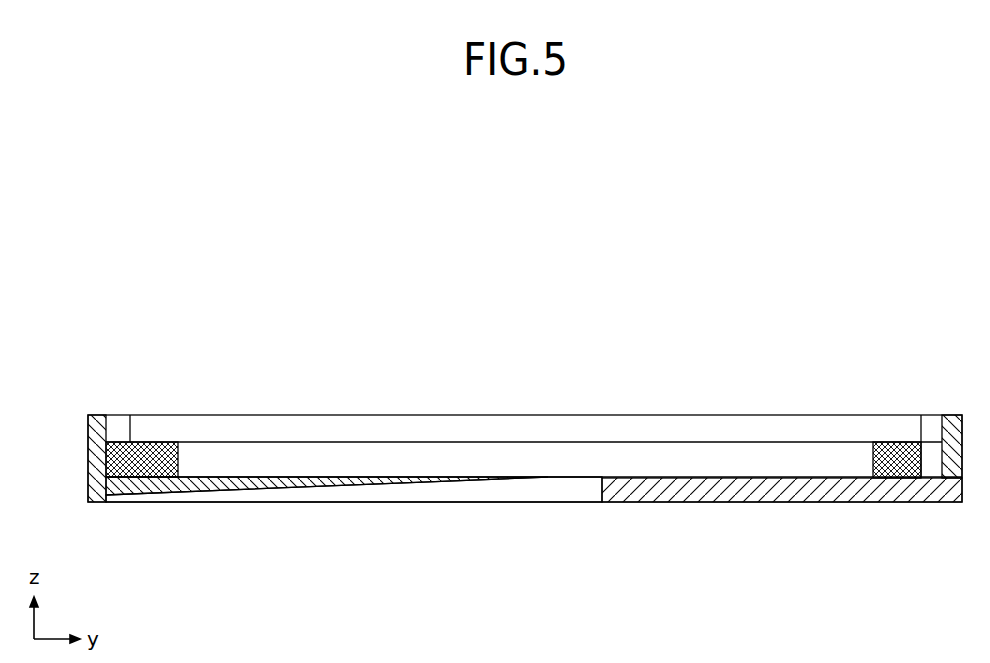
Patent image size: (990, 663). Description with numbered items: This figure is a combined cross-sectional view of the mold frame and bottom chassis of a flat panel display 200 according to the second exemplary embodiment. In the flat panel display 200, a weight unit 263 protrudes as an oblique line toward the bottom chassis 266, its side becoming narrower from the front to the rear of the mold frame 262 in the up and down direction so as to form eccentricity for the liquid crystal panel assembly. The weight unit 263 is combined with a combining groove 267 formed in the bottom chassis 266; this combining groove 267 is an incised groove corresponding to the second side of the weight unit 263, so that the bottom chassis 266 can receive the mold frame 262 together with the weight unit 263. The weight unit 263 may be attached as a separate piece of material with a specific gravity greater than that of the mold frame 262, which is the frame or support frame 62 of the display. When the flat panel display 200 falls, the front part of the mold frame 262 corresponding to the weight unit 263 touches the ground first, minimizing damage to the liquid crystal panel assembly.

The flat panel display 200 is at (489, 330).
The mold frame 62 is at (158, 448).
The mold frame 262 is at (897, 468).
The weight unit 263 is at (135, 490).
The combining groove 267 is at (398, 490).
The bottom chassis 266 is at (732, 495).